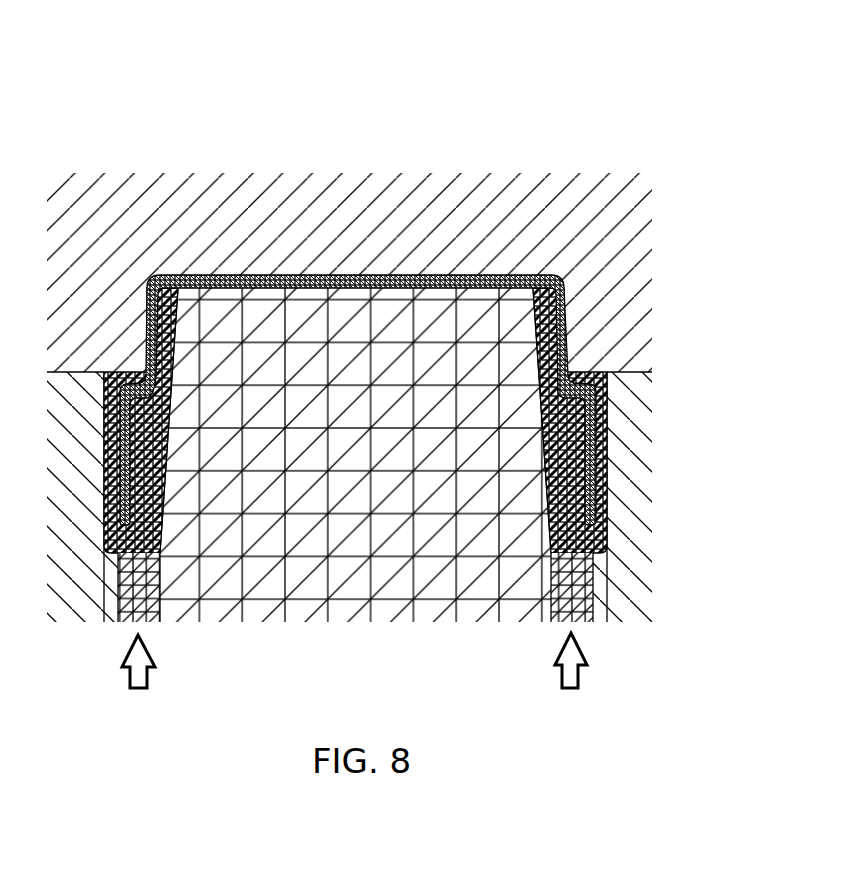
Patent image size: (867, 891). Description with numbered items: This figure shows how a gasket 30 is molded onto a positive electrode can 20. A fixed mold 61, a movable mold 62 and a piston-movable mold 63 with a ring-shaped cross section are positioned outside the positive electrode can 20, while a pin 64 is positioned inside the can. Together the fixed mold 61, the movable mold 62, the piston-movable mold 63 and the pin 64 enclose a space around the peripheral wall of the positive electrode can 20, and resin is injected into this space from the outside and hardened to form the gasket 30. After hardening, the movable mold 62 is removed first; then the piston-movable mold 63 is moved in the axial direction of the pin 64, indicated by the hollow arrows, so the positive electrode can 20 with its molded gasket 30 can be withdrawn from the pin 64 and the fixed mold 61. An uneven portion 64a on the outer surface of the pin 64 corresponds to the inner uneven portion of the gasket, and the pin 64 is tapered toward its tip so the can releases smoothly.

The positive electrode can 20 is at (217, 271).
The gasket 30 is at (607, 528).
The fixed mold 61 is at (640, 442).
The movable mold 62 is at (435, 197).
The piston-movable mold 63 is at (130, 622).
The pin 64 is at (352, 603).
The uneven portion 64a is at (596, 390).